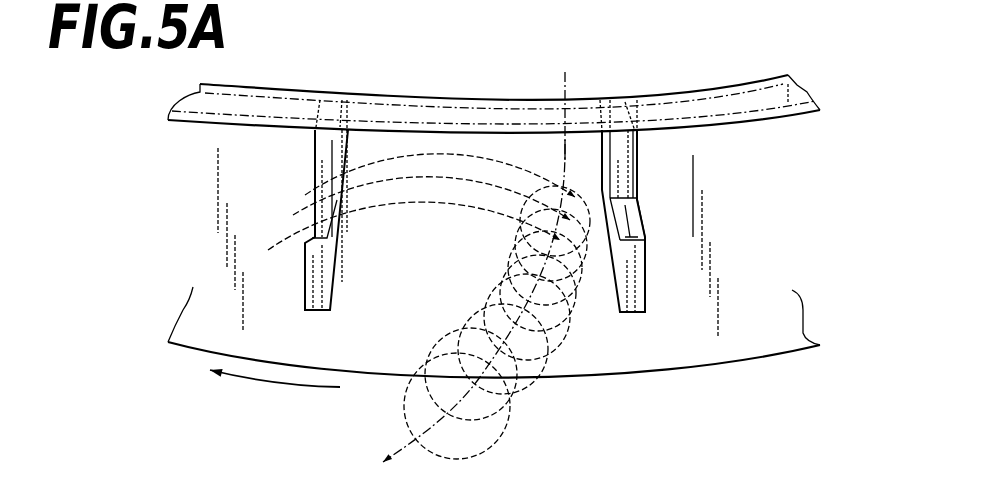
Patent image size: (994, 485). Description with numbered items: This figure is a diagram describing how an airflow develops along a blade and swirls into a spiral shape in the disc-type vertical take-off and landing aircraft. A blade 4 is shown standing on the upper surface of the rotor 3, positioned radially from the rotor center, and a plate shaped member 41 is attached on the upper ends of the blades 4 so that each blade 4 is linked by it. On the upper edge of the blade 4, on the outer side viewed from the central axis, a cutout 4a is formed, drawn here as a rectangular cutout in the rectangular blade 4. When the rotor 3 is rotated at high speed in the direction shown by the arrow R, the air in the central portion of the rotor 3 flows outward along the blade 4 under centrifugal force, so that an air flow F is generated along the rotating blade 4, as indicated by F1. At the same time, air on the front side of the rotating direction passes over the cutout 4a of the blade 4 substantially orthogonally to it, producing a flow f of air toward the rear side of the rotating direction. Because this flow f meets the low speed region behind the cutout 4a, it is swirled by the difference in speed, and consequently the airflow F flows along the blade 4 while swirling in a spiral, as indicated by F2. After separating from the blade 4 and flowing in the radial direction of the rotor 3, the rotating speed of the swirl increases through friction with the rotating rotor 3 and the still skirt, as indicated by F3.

The plate shaped member 41 is at (735, 102).
The blade 4 is at (614, 177).
The cutout 4a is at (322, 208).
The rotor 3 is at (727, 348).
The flow of air f is at (402, 155).
The air flow F is at (479, 255).
The air flow along the blade F1 is at (567, 147).
The spiral swirling airflow F2 is at (507, 240).
The separated swirling airflow F3 is at (443, 328).
The rotating direction of the rotor R is at (275, 397).